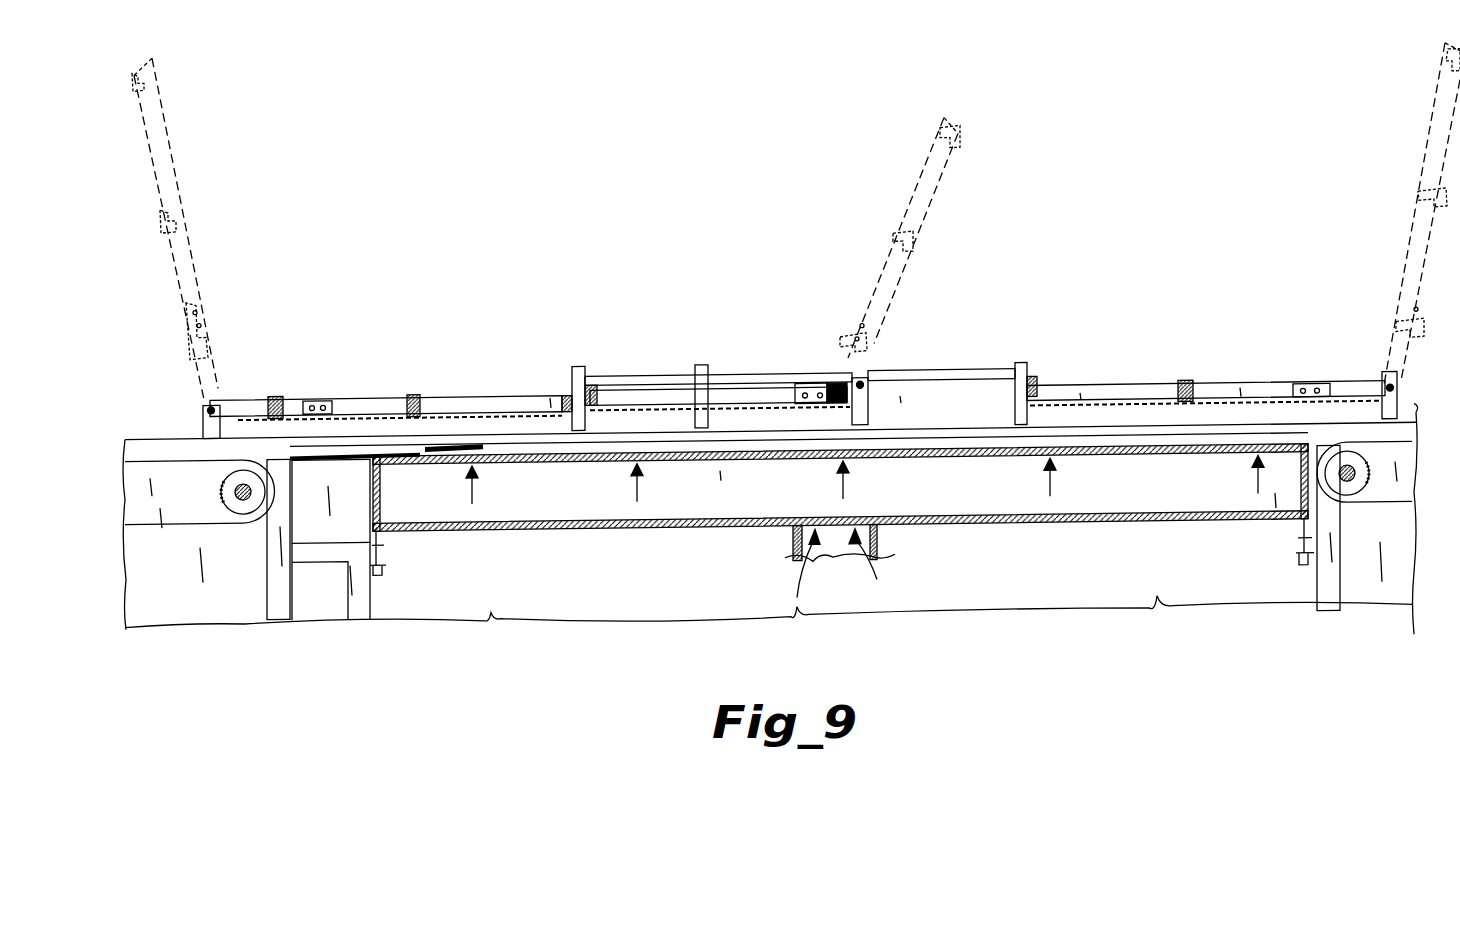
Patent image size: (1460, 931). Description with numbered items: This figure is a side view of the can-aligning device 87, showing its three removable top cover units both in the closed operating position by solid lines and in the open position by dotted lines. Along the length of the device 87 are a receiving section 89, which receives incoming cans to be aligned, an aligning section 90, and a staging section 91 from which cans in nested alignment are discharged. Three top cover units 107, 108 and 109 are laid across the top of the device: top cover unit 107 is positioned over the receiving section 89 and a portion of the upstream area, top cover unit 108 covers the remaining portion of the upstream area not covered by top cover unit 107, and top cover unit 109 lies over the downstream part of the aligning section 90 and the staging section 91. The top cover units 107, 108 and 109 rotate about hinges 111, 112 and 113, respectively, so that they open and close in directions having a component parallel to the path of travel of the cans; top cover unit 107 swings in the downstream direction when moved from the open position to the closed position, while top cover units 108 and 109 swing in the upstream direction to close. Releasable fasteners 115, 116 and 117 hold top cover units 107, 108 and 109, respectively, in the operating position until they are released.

The device 87 is at (517, 277).
The receiving section 89 is at (327, 390).
The aligning section 90 is at (805, 390).
The staging section 91 is at (1306, 388).
The top cover unit 107 is at (178, 139).
The top cover unit 108 is at (905, 192).
The top cover unit 109 is at (1420, 158).
The hinge 111 is at (205, 401).
The hinge 112 is at (863, 385).
The hinge 113 is at (1390, 392).
The releasable fastener 115 is at (573, 370).
The releasable fastener 116 is at (654, 330).
The releasable fastener 117 is at (1034, 378).